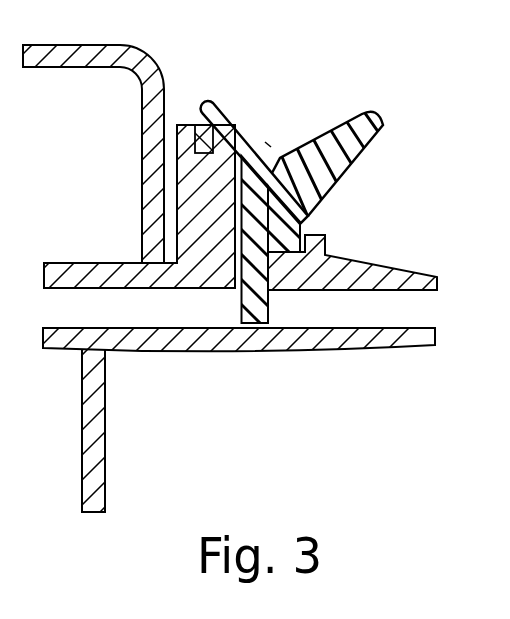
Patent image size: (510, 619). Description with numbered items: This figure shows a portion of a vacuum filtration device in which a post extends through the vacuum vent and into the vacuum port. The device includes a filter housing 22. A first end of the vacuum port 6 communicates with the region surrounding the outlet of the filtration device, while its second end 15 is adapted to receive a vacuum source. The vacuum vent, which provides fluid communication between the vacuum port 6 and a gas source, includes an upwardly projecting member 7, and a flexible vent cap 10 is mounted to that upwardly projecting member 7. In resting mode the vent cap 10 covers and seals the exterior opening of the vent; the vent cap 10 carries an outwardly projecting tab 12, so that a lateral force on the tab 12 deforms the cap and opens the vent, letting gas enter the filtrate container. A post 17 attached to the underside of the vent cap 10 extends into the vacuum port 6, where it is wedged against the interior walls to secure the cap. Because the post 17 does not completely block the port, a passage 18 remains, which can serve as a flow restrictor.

The vacuum port 6 is at (163, 317).
The upwardly projecting member 7 is at (230, 125).
The vent cap 10 is at (265, 142).
The outwardly projecting tab 12 is at (378, 112).
The second end 15 is at (437, 334).
The post 17 is at (241, 297).
The passage 18 is at (270, 323).
The filter housing 22 is at (165, 108).